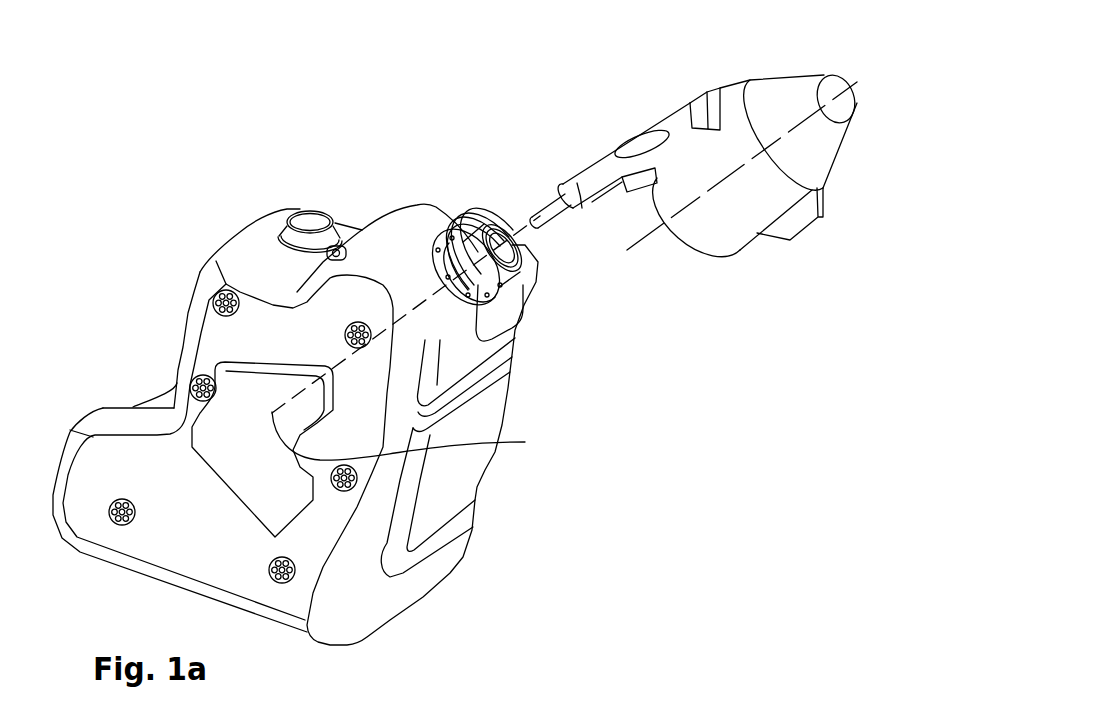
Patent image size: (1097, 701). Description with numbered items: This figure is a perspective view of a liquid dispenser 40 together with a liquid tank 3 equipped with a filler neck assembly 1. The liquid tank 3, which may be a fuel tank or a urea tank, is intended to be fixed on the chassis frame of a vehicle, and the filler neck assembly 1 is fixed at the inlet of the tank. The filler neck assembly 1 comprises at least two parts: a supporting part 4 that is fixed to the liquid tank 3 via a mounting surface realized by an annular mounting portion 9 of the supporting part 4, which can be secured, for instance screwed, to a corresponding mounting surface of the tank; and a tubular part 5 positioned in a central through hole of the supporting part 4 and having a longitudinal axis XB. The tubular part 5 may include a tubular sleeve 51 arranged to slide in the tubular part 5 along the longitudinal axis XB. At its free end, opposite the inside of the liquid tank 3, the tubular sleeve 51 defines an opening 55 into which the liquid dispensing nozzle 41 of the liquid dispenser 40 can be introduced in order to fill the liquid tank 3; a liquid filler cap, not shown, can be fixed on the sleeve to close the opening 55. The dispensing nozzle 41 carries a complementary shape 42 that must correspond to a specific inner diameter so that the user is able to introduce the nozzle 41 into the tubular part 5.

The filler neck assembly 1 is at (509, 222).
The liquid tank 3 is at (258, 260).
The supporting part 4 is at (520, 263).
The annular mounting portion 9 is at (500, 287).
The tubular part 5 is at (461, 254).
The tubular sleeve 51 is at (520, 323).
The opening 55 is at (523, 247).
The liquid dispenser 40 is at (730, 110).
The liquid dispensing nozzle 41 is at (580, 185).
The complementary shape 42 is at (537, 214).
The longitudinal axis XB is at (417, 338).